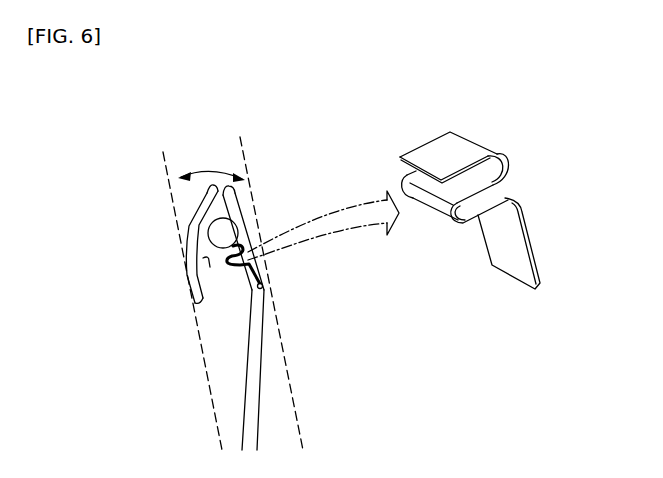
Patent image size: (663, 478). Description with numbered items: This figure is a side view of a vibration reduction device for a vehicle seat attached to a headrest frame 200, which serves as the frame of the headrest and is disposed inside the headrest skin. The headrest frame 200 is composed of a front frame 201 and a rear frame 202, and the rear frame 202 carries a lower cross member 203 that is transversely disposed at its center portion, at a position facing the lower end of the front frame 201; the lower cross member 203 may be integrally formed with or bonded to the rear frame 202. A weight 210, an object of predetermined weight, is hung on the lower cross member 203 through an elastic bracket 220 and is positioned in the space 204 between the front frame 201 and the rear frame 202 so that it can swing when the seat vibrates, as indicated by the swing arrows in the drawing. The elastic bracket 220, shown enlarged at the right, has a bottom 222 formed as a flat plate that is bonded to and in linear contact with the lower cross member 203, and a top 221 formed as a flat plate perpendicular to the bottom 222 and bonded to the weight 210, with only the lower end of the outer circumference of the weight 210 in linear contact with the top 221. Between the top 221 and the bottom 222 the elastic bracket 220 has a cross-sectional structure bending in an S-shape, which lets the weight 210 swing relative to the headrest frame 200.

The headrest frame 200 is at (340, 235).
The front frame 201 is at (209, 203).
The rear frame 202 is at (260, 338).
The lower cross member 203 is at (266, 285).
The space 204 is at (190, 262).
The weight 210 is at (217, 233).
The elastic bracket 220 is at (492, 173).
The top of elastic bracket 221 is at (425, 148).
The bottom of elastic bracket 222 is at (530, 240).